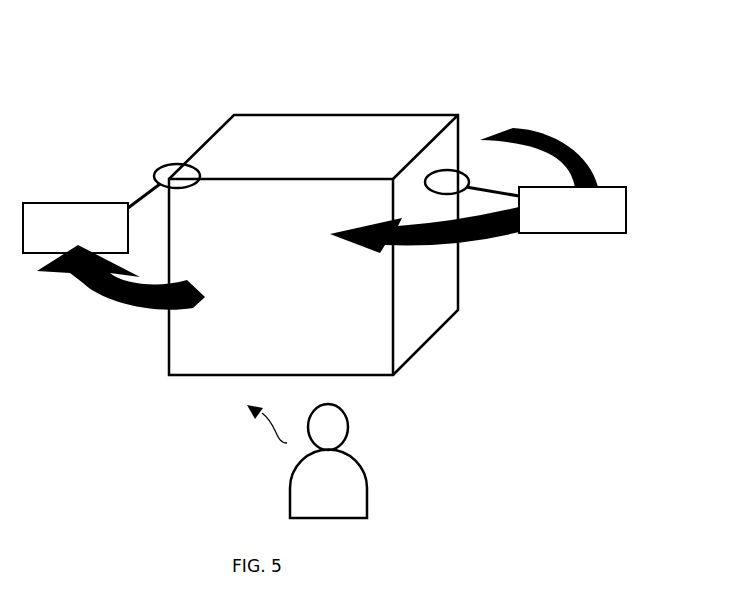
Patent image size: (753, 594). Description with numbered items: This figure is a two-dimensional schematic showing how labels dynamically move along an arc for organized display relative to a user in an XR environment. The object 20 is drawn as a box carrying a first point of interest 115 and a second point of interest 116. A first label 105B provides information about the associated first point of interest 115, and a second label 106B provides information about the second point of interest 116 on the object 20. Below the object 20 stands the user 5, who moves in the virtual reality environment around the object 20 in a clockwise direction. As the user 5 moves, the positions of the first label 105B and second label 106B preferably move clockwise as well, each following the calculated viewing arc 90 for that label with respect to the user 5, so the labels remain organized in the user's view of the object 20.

The object 20 is at (347, 120).
The first point of interest 115 is at (178, 165).
The second point of interest 116 is at (452, 167).
The first label 105B is at (75, 200).
The second label 106B is at (617, 208).
The viewing arc 90 is at (83, 288).
The user 5 is at (290, 466).